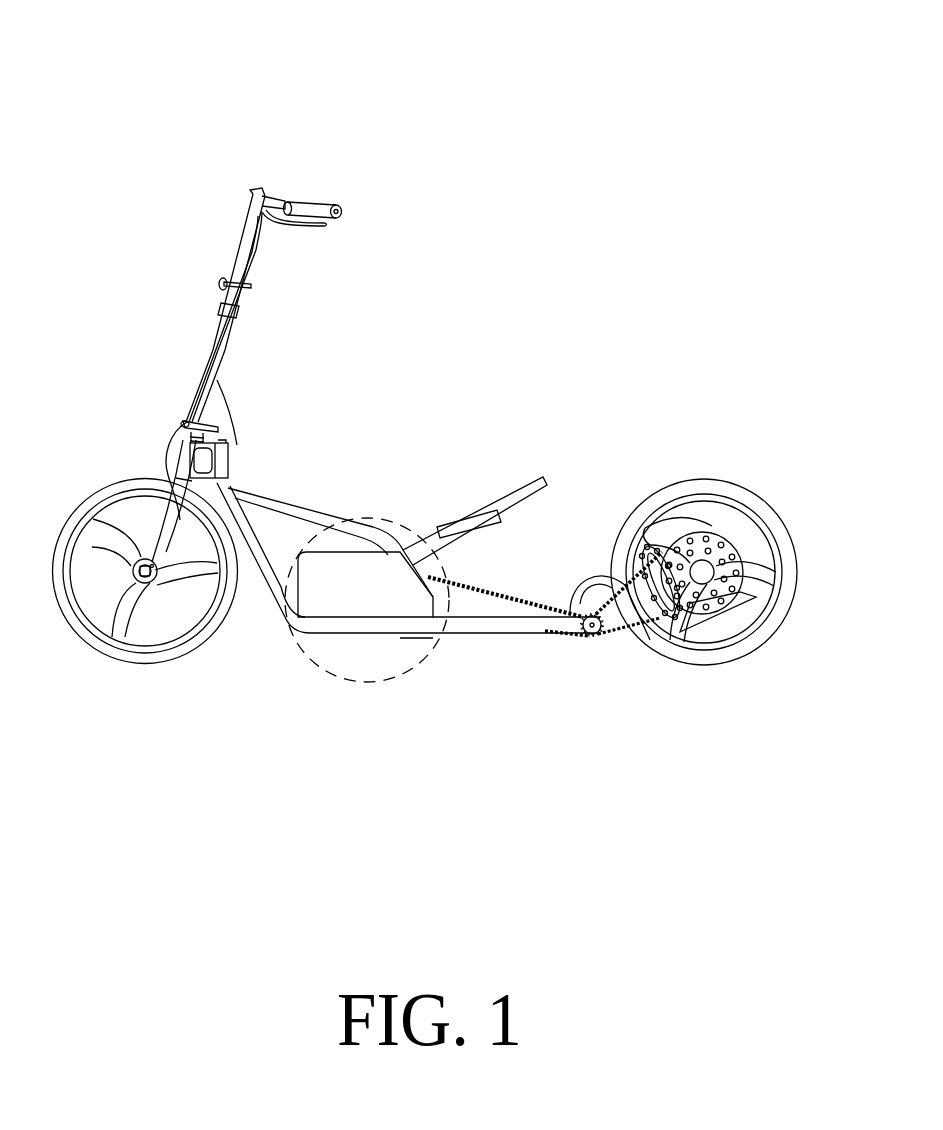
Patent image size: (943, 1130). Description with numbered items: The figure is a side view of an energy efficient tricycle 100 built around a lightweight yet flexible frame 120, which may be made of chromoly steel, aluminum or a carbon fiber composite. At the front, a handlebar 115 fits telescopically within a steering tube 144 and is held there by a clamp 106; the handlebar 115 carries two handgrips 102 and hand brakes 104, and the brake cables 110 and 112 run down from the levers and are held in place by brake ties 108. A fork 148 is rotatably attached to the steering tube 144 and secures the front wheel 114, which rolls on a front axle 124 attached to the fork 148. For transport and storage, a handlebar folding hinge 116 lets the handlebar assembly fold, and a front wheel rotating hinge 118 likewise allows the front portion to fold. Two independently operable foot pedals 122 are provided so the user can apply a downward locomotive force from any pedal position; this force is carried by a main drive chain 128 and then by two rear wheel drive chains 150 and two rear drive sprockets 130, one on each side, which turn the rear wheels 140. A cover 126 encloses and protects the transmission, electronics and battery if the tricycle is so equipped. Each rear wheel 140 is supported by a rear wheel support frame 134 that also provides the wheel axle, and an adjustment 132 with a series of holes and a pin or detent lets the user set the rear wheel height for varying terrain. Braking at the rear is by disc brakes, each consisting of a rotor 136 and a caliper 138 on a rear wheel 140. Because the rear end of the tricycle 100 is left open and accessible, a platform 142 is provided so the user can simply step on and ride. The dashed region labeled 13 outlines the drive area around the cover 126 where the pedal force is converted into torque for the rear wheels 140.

The energy efficient tricycle 100 is at (172, 108).
The handgrips 102 is at (337, 202).
The hand brakes 104 is at (327, 226).
The clamp 106 is at (221, 280).
The brake ties 108 is at (221, 308).
The brake cable 110 is at (220, 346).
The brake cable 112 is at (228, 335).
The front wheel 114 is at (136, 588).
The handlebar 115 is at (268, 197).
The handlebar folding hinge 116 is at (208, 422).
The front wheel rotating hinge 118 is at (218, 460).
The frame 120 is at (320, 518).
The foot pedals 122 is at (547, 474).
The front axle 124 is at (145, 583).
The cover 126 is at (377, 585).
The main drive chain 128 is at (495, 637).
The rear drive sprockets 130 is at (587, 637).
The adjustment 132 is at (643, 623).
The rear wheel support frame 134 is at (687, 627).
The rotor 136 is at (717, 607).
The caliper 138 is at (717, 672).
The rear wheels 140 is at (687, 490).
The platform 142 is at (600, 614).
The steering tube 144 is at (212, 363).
The fork 148 is at (173, 523).
The rear wheel drive chains 150 is at (652, 614).
The drive unit region 13 is at (397, 682).